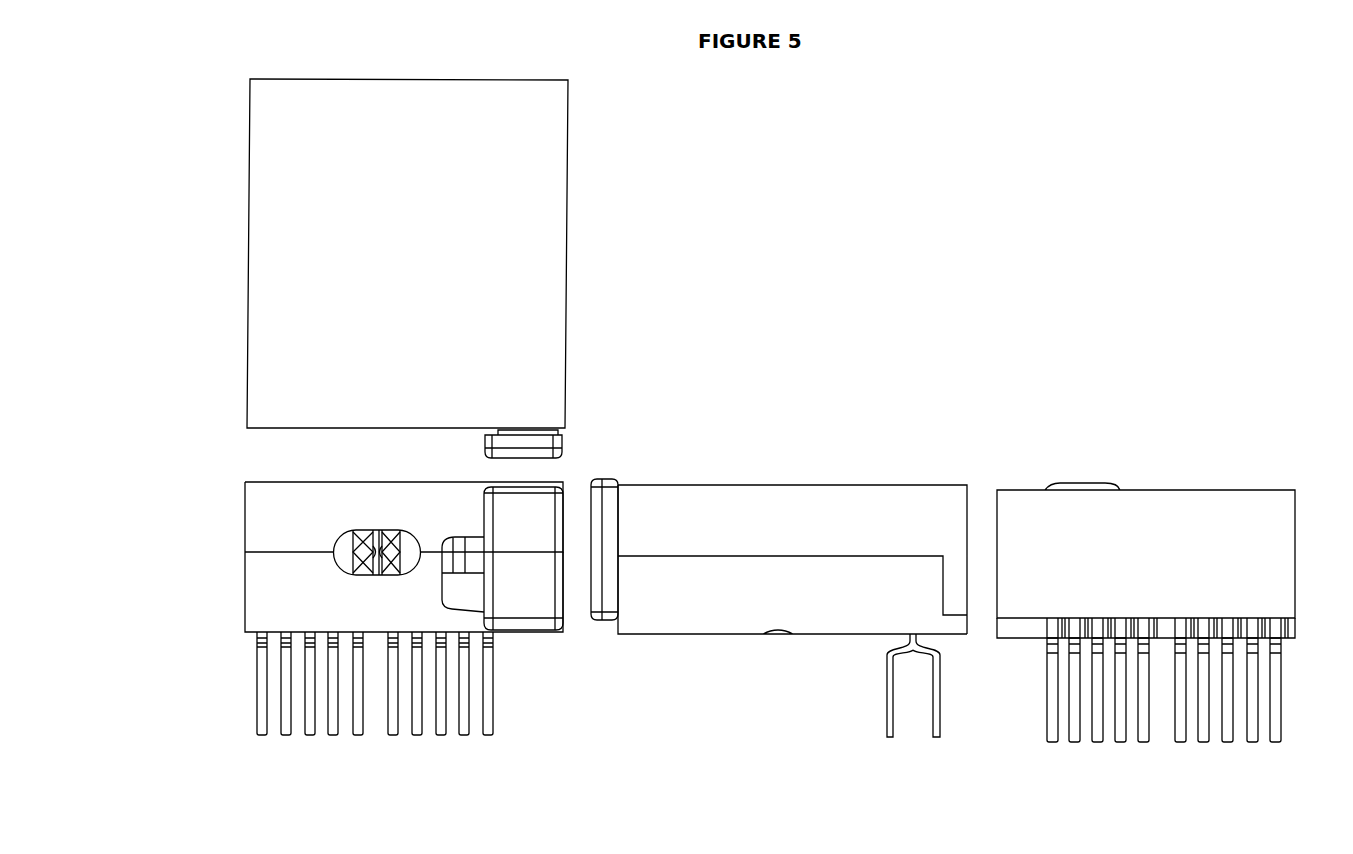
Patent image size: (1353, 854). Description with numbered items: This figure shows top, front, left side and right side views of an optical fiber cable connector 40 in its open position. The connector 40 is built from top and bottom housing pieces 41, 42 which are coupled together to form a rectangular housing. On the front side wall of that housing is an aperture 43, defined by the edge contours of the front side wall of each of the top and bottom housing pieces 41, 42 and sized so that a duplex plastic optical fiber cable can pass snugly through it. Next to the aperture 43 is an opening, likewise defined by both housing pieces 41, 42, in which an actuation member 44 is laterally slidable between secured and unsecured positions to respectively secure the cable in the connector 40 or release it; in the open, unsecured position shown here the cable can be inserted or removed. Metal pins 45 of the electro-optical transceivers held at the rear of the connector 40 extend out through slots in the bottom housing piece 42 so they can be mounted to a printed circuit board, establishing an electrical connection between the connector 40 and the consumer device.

The connector 40 is at (218, 120).
The top housing piece 41 is at (505, 172).
The bottom housing piece 42 is at (262, 585).
The aperture 43 is at (355, 552).
The actuation member 44 is at (533, 443).
The metal pins 45 is at (910, 717).